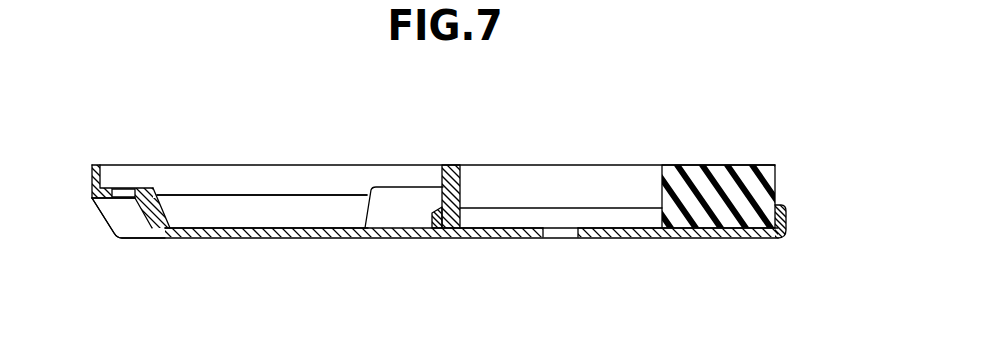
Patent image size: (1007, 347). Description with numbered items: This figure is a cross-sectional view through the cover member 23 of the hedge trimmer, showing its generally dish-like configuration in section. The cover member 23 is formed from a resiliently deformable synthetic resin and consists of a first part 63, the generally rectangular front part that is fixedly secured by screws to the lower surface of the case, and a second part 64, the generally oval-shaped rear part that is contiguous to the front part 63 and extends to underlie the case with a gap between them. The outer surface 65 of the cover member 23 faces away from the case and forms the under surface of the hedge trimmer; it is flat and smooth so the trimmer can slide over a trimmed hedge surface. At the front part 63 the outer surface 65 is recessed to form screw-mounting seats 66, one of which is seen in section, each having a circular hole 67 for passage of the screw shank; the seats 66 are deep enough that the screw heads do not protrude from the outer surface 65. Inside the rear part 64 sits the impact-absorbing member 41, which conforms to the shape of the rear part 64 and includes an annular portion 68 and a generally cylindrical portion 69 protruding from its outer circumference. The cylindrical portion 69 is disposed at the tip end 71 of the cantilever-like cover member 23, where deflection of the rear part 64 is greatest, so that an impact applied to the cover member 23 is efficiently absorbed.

The cover member 23 is at (200, 140).
The impact-absorbing member 41 is at (717, 158).
The first part 63 is at (224, 228).
The second part 64 is at (607, 228).
The outer surface 65 is at (478, 240).
The screw-mounting seat 66 is at (137, 188).
The circular hole 67 is at (123, 198).
The annular portion 68 is at (448, 167).
The cylindrical portion 69 is at (743, 183).
The tip end 71 is at (780, 210).